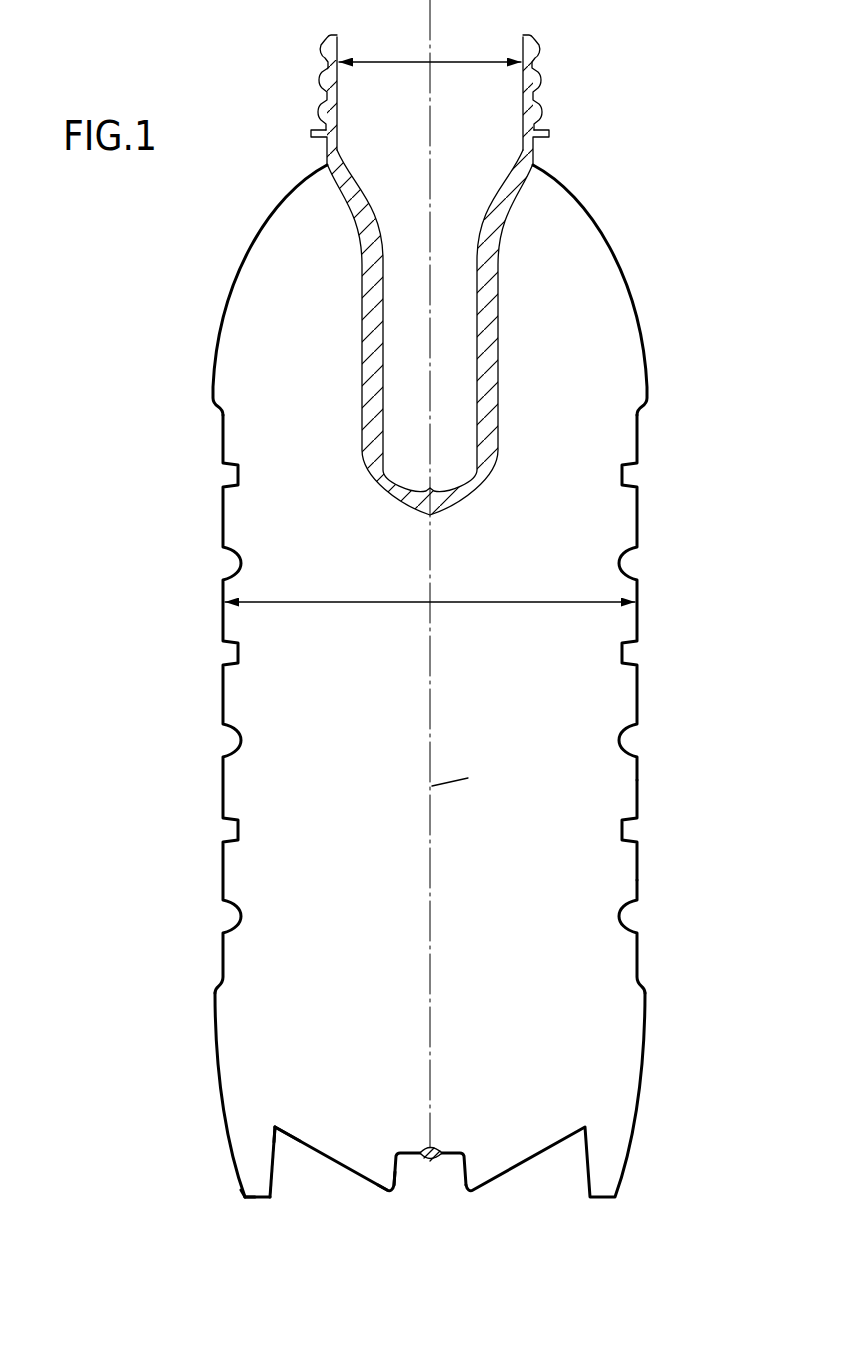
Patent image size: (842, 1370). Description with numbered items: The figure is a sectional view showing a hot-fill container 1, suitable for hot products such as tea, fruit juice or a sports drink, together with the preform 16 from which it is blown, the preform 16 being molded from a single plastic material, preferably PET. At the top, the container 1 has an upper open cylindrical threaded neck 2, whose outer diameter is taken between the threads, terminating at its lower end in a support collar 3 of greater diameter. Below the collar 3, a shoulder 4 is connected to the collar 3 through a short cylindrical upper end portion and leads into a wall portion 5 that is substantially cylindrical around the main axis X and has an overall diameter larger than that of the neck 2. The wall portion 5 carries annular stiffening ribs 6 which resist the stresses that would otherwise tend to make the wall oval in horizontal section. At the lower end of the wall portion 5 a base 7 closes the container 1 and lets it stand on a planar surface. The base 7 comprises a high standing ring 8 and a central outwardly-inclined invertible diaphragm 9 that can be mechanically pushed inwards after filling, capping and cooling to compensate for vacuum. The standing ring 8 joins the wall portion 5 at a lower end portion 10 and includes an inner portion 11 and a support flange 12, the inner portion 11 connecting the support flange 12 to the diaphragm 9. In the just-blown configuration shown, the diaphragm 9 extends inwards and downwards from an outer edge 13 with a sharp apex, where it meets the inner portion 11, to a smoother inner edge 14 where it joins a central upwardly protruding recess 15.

The hot-fill container 1 is at (645, 327).
The neck 2 is at (535, 52).
The support collar 3 is at (548, 135).
The shoulder 4 is at (602, 233).
The wall portion 5 is at (640, 697).
The annular stiffening ribs 6 is at (644, 868).
The base 7 is at (523, 1200).
The standing ring 8 is at (244, 1203).
The invertible diaphragm 9 is at (330, 1156).
The lower end portion 10 is at (236, 1172).
The inner portion 11 is at (272, 1170).
The support flange 12 is at (258, 1199).
The outer edge 13 is at (275, 1126).
The inner edge 14 is at (389, 1191).
The central upwardly protruding recess 15 is at (461, 1152).
The preform 16 is at (502, 409).